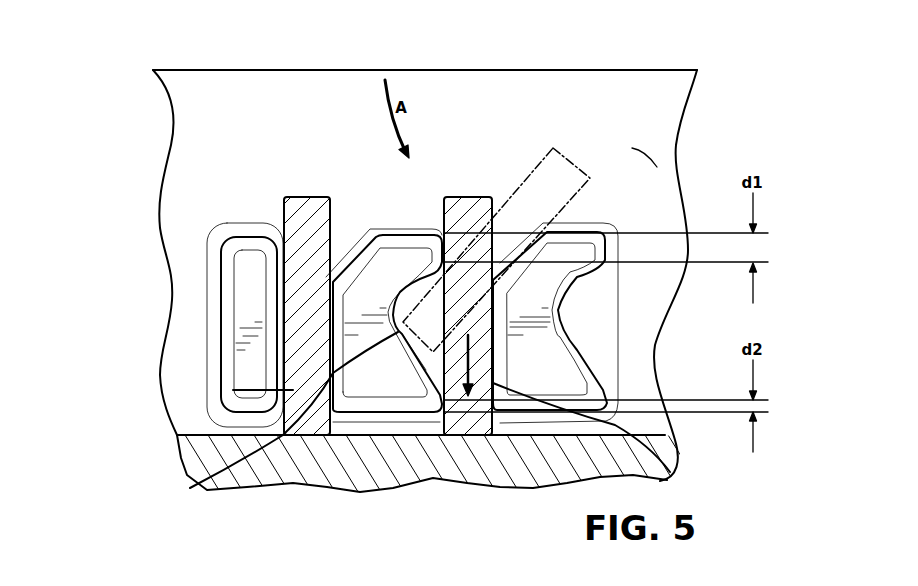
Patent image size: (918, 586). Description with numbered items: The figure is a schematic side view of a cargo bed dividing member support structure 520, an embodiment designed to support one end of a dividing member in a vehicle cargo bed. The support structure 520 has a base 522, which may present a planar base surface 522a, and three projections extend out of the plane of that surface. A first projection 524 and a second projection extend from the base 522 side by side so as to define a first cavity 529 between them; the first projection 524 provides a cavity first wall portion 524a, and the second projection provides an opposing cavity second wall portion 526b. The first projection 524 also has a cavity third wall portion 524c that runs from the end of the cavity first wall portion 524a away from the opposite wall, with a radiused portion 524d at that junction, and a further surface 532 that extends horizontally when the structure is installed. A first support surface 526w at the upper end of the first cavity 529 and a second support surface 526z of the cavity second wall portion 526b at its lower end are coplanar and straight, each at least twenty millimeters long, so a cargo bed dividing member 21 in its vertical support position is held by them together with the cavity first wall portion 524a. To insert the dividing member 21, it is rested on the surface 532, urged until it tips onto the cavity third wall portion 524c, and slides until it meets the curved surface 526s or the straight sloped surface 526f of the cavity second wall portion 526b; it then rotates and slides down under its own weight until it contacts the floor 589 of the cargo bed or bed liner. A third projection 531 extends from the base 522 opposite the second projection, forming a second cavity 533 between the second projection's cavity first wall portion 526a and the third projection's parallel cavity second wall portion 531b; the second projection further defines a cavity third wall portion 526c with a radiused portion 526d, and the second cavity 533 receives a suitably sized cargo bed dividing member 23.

The cargo bed dividing member support structure 520 is at (764, 150).
The base 522 is at (190, 300).
The base surface 522a is at (645, 152).
The cargo bed dividing member 23 is at (307, 197).
The cargo bed dividing member 21 is at (478, 197).
The first projection 524 is at (545, 352).
The cavity first wall portion 524a is at (668, 477).
The cavity third wall portion 524c is at (493, 270).
The radiused portion 524d is at (565, 290).
The cavity first wall portion 526a is at (330, 300).
The cavity second wall portion 526b is at (405, 353).
The cavity third wall portion 526c is at (357, 248).
The radiused portion 526d is at (333, 280).
The sloped surface 526f is at (190, 488).
The curved surface 526s is at (404, 283).
The first support surface 526w is at (468, 197).
The second support surface 526z is at (433, 385).
The first cavity 529 is at (443, 368).
The third projection 531 is at (245, 330).
The cavity second wall portion 531b is at (288, 362).
The surface 532 is at (598, 213).
The second cavity 533 is at (230, 393).
The floor 589 is at (507, 437).